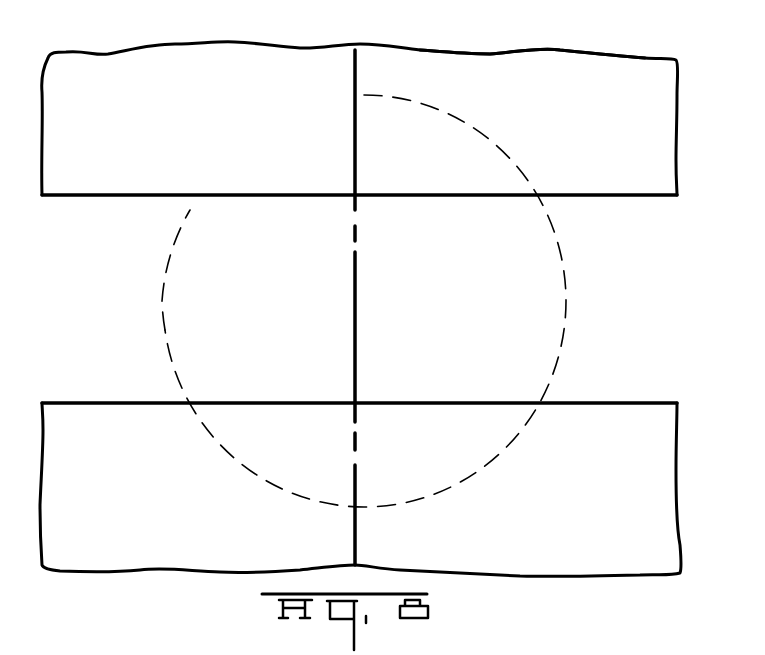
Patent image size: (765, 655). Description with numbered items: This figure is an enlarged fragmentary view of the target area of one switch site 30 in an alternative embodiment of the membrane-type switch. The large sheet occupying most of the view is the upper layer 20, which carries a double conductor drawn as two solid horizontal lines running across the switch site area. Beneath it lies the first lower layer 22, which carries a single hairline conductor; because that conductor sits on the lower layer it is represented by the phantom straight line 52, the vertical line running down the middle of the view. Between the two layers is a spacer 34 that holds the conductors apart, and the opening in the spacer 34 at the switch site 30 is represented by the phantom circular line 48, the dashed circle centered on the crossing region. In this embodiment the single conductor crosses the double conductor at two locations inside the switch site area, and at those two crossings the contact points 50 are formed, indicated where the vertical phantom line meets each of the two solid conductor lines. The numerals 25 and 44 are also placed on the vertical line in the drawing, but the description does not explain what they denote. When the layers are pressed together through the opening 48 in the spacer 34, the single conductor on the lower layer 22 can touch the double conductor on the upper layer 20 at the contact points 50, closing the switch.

The upper layer 20 is at (665, 153).
The first lower layer 22 is at (549, 50).
The vertical scribe line 25 is at (355, 170).
The switch site 30 is at (330, 310).
The spacer 34 is at (168, 349).
The vertical line 44 is at (357, 150).
The phantom circular line 48 is at (163, 275).
The contact points 50 is at (360, 201).
The phantom straight line 52 is at (73, 199).